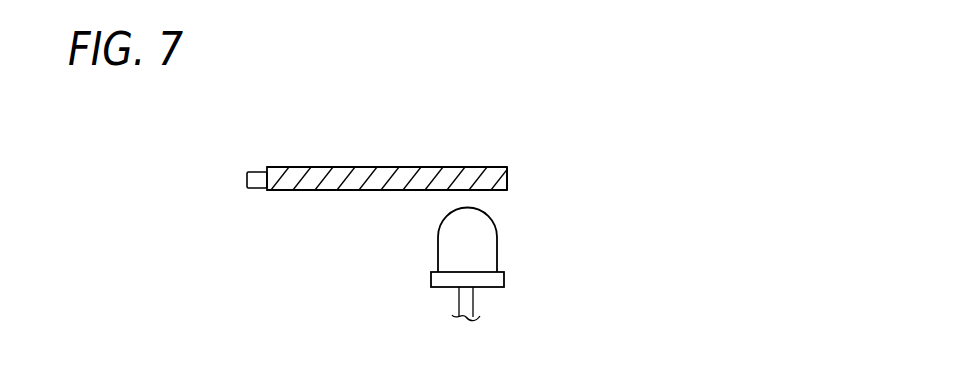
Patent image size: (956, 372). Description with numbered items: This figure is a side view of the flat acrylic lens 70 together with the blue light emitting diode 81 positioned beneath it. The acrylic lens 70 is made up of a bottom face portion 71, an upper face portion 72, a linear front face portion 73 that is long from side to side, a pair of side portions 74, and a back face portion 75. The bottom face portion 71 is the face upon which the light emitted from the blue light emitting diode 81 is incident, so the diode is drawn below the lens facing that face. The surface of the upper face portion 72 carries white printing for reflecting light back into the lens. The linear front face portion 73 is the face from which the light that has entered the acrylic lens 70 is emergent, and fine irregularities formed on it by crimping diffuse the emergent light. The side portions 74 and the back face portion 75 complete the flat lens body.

The acrylic lens 70 is at (376, 171).
The bottom face portion 71 is at (307, 191).
The upper face portion 72 is at (325, 166).
The front face portion 73 is at (247, 179).
The side portions 74 is at (357, 191).
The back face portion 75 is at (507, 179).
The blue light emitting diode 81 is at (497, 247).